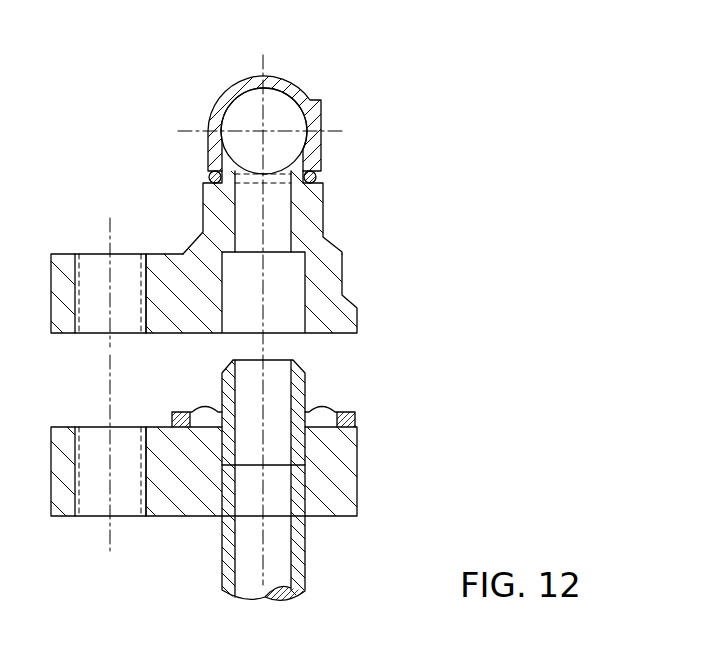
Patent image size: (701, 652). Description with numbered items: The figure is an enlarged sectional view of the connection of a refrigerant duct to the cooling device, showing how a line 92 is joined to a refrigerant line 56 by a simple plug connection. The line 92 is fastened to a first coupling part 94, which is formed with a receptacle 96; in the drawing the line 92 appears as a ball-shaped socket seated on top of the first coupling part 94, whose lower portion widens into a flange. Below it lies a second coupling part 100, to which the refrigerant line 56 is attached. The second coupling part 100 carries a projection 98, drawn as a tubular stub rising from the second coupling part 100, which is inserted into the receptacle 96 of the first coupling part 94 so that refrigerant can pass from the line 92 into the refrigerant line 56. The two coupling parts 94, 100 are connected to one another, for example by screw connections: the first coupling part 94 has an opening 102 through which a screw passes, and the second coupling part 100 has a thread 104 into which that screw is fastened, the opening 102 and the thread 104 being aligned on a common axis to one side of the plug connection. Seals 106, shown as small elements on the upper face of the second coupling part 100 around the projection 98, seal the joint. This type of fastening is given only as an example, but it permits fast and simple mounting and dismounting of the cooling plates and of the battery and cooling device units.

The refrigerant feed line 56 is at (295, 557).
The line 92 is at (322, 113).
The first coupling part 94 is at (342, 268).
The receptacle 96 is at (305, 307).
The projection 98 is at (298, 388).
The second coupling part 100 is at (340, 473).
The opening 102 is at (95, 277).
The thread 104 is at (88, 455).
The seal 106 is at (355, 418).